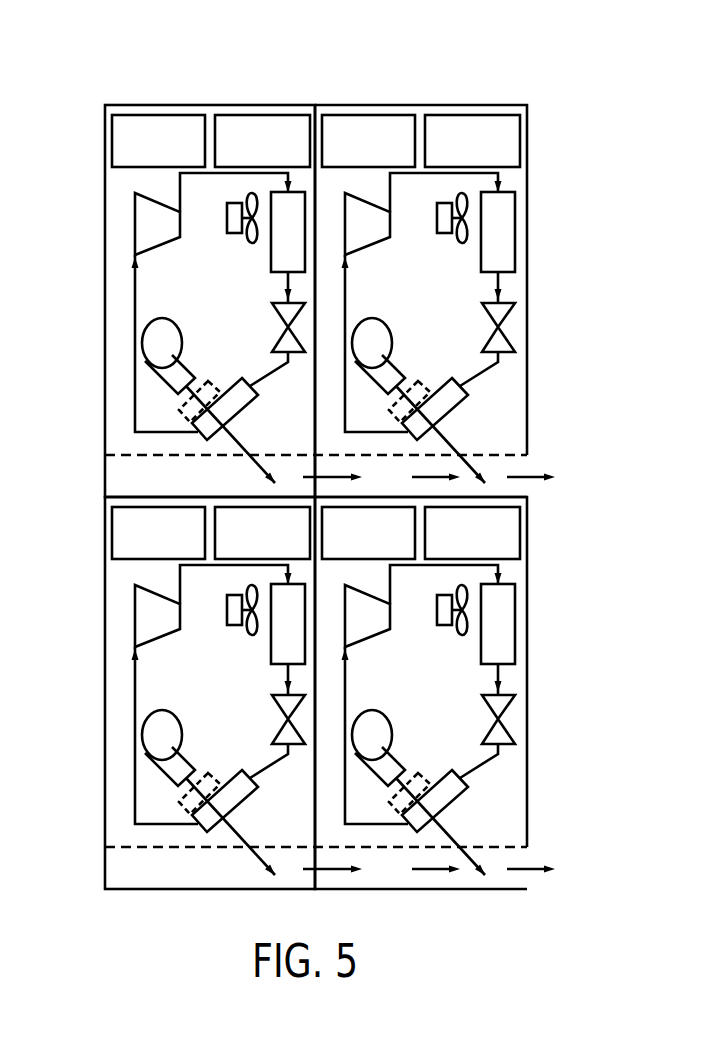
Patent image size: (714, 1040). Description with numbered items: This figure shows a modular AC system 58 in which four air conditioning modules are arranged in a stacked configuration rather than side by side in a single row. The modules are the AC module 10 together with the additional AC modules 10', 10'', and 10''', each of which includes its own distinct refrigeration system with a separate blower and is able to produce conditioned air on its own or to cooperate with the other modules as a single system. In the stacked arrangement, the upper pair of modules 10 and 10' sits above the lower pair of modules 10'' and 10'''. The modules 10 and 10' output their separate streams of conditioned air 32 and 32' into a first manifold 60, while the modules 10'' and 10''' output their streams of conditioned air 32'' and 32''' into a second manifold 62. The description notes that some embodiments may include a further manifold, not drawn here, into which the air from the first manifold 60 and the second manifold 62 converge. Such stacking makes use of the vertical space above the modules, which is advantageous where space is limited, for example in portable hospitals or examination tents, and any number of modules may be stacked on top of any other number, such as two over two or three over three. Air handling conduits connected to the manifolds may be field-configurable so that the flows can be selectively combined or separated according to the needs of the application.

The modular AC system 58 is at (90, 61).
The AC module 10 is at (210, 271).
The AC module 10' is at (421, 272).
The AC module 10'' is at (175, 693).
The AC module 10''' is at (461, 693).
The conditioned air 32 is at (242, 434).
The conditioned air 32' is at (455, 434).
The conditioned air 32'' is at (247, 826).
The conditioned air 32''' is at (458, 826).
The first manifold 60 is at (100, 478).
The second manifold 62 is at (100, 871).